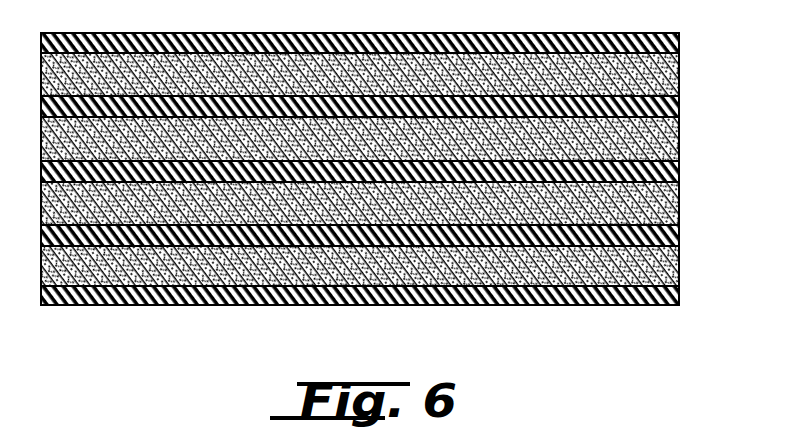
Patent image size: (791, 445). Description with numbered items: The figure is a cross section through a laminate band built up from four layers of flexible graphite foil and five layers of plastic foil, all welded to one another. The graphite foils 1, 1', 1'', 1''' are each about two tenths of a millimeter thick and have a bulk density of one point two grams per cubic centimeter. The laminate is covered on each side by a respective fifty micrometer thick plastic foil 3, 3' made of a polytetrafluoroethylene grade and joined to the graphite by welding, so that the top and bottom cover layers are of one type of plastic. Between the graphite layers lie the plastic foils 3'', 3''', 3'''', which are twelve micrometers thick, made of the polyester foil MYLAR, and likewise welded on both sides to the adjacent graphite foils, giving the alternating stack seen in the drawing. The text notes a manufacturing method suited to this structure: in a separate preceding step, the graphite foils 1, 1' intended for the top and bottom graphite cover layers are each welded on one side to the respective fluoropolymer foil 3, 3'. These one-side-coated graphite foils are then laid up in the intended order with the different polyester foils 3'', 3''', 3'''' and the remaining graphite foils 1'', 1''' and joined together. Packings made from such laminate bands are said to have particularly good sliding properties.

The plastic foil 3 is at (392, 38).
The graphite foil 1 is at (392, 74).
The plastic foil 3'' is at (398, 103).
The graphite foil 1'' is at (398, 139).
The plastic foil 3''' is at (402, 170).
The graphite foil 1''' is at (402, 203).
The plastic foil 3'''' is at (405, 235).
The graphite foil 1' is at (396, 266).
The plastic foil 3' is at (396, 293).